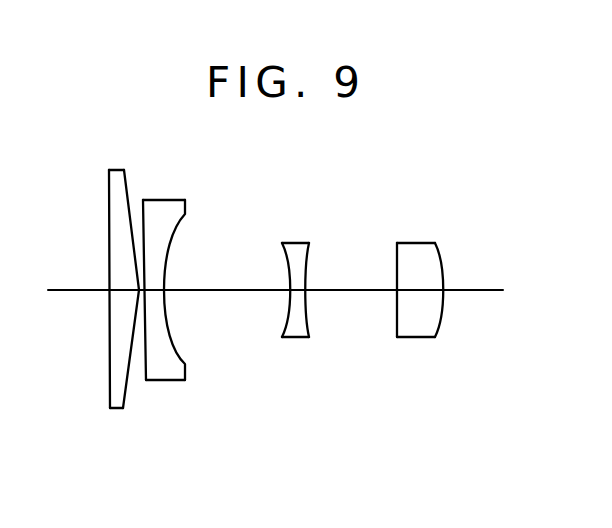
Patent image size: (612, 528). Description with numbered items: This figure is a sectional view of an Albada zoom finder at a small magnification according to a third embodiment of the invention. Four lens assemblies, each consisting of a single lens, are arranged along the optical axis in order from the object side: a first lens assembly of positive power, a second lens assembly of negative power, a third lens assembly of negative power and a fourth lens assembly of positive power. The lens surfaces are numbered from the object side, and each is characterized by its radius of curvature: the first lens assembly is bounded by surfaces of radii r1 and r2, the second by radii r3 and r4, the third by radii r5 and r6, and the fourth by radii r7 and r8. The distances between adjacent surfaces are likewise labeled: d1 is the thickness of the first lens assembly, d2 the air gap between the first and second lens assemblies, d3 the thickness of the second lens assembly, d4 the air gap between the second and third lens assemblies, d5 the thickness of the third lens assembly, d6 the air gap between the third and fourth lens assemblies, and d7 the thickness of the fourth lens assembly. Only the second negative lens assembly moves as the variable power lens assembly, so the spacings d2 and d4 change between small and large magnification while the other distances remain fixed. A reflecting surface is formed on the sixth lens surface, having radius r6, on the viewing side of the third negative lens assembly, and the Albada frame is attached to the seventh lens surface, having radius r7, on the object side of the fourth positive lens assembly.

The first lens surface radius of curvature r1 is at (104, 232).
The second lens surface radius of curvature r2 is at (127, 183).
The third lens surface radius of curvature r3 is at (143, 210).
The fourth lens surface radius of curvature r4 is at (180, 233).
The fifth lens surface radius of curvature r5 is at (284, 272).
The sixth lens surface radius of curvature r6 is at (312, 264).
The seventh lens surface radius of curvature r7 is at (396, 263).
The eighth lens surface radius of curvature r8 is at (442, 278).
The first lens surface distance d1 is at (122, 291).
The second lens surface distance d2 is at (139, 293).
The third lens surface distance d3 is at (157, 291).
The fourth lens surface distance d4 is at (218, 292).
The fifth lens surface distance d5 is at (297, 292).
The sixth lens surface distance d6 is at (353, 292).
The seventh lens surface distance d7 is at (415, 292).